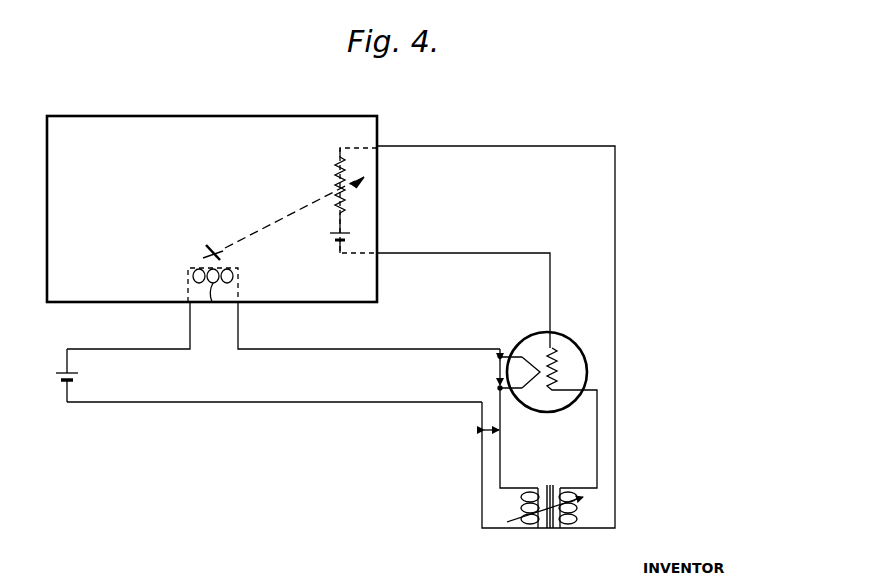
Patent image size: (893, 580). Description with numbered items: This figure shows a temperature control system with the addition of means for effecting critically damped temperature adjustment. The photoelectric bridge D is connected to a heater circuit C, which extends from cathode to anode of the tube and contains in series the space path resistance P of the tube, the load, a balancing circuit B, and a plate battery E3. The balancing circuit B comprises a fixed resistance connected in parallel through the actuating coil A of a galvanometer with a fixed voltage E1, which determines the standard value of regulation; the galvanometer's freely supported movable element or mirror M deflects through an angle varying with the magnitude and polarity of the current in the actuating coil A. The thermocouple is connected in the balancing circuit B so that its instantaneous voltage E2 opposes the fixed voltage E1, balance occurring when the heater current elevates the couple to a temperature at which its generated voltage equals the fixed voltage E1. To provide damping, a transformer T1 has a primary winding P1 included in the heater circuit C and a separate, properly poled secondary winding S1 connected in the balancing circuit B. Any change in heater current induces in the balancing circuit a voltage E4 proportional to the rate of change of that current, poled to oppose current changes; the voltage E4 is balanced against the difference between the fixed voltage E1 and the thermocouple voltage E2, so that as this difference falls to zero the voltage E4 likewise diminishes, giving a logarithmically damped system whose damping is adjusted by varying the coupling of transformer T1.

The photoelectric bridge D is at (228, 98).
The circuit C is at (465, 164).
The space path resistance P is at (336, 182).
The plate battery E3 is at (330, 236).
The movable element or mirror M is at (208, 254).
The actuating coil A is at (215, 302).
The fixed voltage E1 is at (80, 375).
The balancing circuit B is at (238, 400).
The instantaneous voltage of the thermocouple E2 is at (494, 372).
The induced voltage E4 is at (484, 436).
The transformer T1 is at (550, 531).
The secondary winding S1 is at (530, 516).
The primary winding P1 is at (575, 516).